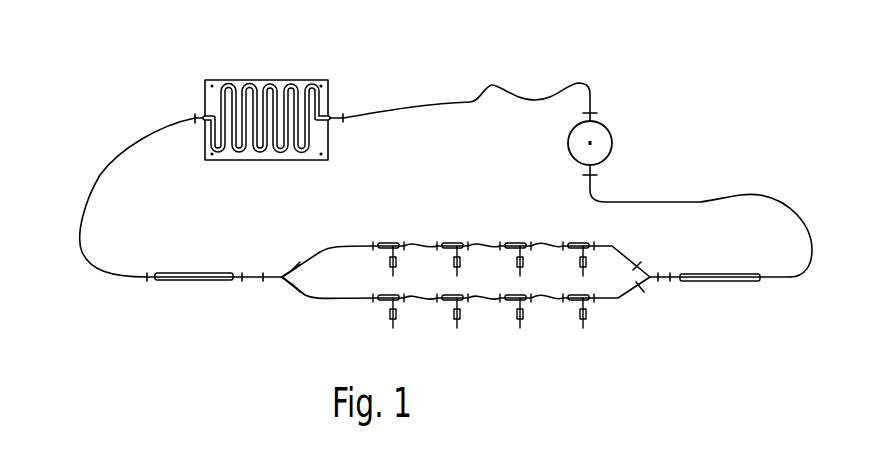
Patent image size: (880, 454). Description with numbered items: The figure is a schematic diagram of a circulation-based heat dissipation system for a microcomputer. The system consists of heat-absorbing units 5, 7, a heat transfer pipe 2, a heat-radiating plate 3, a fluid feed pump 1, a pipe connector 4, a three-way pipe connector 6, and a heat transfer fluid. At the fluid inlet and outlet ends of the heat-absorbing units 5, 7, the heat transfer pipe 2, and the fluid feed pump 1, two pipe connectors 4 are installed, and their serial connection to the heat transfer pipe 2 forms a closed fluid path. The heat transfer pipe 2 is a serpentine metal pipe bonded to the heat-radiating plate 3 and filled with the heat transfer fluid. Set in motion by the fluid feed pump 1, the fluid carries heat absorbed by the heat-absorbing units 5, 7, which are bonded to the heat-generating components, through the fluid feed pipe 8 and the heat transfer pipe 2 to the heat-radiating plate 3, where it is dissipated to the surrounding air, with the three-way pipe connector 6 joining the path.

The fluid feed pump 1 is at (612, 136).
The heat transfer pipe 2 is at (278, 86).
The heat-radiating plate 3 is at (328, 96).
The pipe connector 4 is at (195, 117).
The heat-absorbing unit 5 is at (196, 271).
The three-way pipe connector 6 is at (282, 280).
The heat-absorbing unit 7 is at (392, 244).
The fluid feed pipe 8 is at (693, 192).